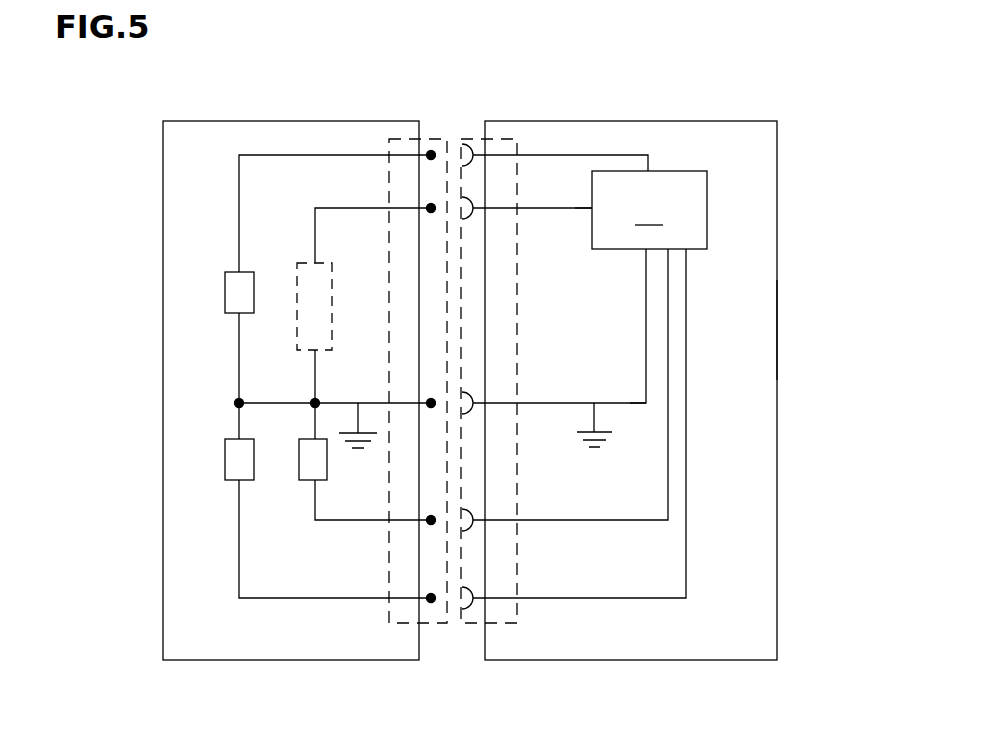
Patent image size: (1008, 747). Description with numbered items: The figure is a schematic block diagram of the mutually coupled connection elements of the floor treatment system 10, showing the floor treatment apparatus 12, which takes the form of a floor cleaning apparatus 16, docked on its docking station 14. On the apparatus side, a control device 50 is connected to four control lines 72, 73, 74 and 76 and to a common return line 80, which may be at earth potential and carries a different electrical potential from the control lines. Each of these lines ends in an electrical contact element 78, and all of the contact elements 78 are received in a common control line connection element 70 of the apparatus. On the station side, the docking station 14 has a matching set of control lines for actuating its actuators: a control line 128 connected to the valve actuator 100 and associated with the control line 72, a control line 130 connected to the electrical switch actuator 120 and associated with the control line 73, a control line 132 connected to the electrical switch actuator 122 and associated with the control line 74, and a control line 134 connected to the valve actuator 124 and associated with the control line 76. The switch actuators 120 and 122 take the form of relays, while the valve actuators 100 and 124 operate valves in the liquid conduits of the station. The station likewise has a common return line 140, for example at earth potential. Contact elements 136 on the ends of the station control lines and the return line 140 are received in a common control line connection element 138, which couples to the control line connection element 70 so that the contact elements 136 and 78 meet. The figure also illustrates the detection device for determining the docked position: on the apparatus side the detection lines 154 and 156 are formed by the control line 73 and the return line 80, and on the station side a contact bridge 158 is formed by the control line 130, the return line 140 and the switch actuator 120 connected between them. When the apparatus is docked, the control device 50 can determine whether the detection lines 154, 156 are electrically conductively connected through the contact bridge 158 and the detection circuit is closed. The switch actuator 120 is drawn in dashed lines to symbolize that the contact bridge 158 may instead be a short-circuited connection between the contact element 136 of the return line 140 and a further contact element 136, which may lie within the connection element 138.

The floor treatment system 10 is at (713, 107).
The floor treatment apparatus 12 is at (777, 270).
The docking station 14 is at (163, 213).
The floor cleaning apparatus 16 is at (777, 330).
The control device 50 is at (649, 210).
The control line connection element 70 is at (466, 623).
The control line 72 is at (525, 155).
The control line 73 is at (557, 210).
The control line 74 is at (558, 520).
The control line 76 is at (558, 598).
The electrical contact elements 78 is at (466, 150).
The return line 80 is at (553, 402).
The valve actuator 100 is at (245, 297).
The electrical switch actuator 120 is at (305, 268).
The electrical switch actuator 122 is at (305, 474).
The valve actuator 124 is at (245, 460).
The control line 128 is at (290, 155).
The control line 130 is at (350, 208).
The control line 132 is at (343, 520).
The control line 134 is at (322, 598).
The contact elements 136 is at (431, 152).
The control line connection element 138 is at (441, 623).
The return line 140 is at (336, 402).
The detection line 154 is at (585, 208).
The detection line 156 is at (638, 405).
The contact bridge 158 is at (315, 372).